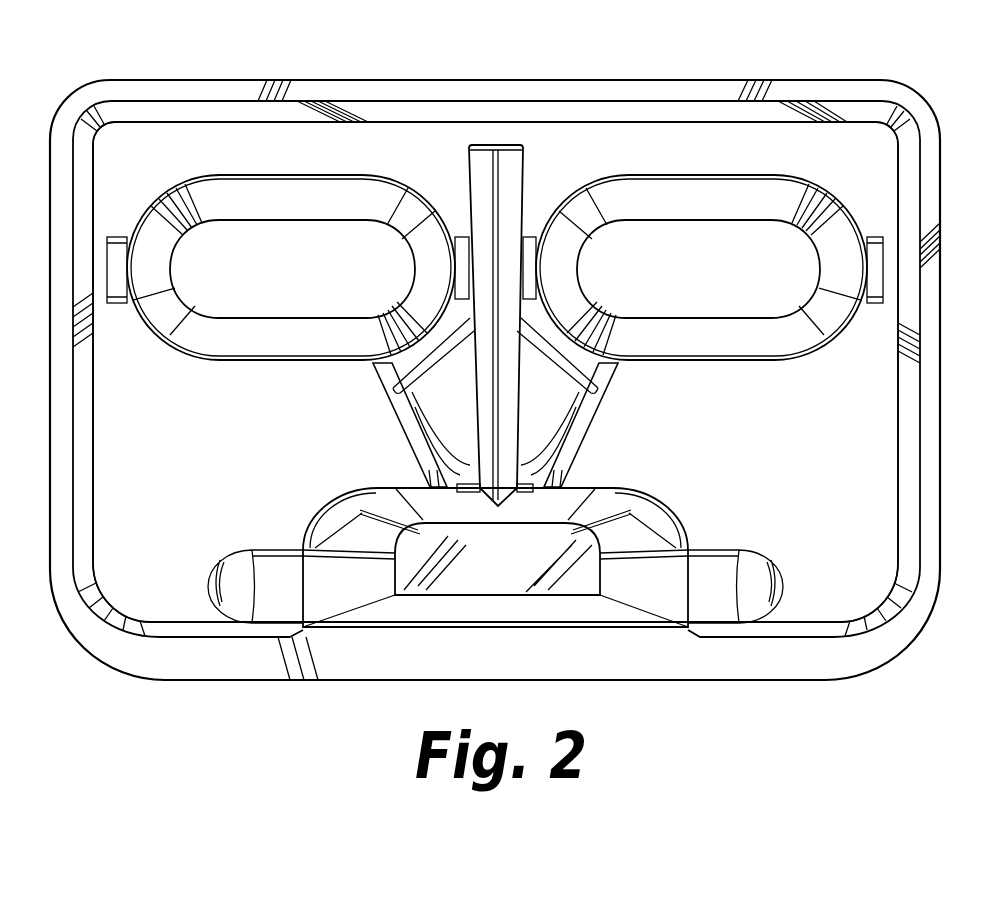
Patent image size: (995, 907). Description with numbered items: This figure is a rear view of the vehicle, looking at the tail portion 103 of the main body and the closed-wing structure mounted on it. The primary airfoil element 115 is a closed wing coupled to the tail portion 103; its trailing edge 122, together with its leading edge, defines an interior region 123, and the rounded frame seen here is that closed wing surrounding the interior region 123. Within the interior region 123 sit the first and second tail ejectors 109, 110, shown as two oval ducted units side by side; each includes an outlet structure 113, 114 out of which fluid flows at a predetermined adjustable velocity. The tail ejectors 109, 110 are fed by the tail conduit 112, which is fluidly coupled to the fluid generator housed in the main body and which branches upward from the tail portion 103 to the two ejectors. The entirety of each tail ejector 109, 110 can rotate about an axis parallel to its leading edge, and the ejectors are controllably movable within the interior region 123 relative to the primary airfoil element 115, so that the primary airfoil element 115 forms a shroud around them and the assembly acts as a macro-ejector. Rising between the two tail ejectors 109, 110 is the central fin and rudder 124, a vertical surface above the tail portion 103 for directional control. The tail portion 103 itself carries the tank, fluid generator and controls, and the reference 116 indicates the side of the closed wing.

The trailing edge 122 is at (107, 68).
The central fin and rudder 124 is at (487, 163).
The outlet structure 114 is at (303, 209).
The outlet structure 113 is at (713, 209).
The second tail ejector 110 is at (233, 343).
The first tail ejector 109 is at (682, 343).
The tail conduit 112 is at (563, 403).
The frame side wall 116 is at (892, 422).
The interior region 123 is at (163, 543).
The tail portion 103 is at (508, 563).
The primary airfoil element 115 is at (797, 660).